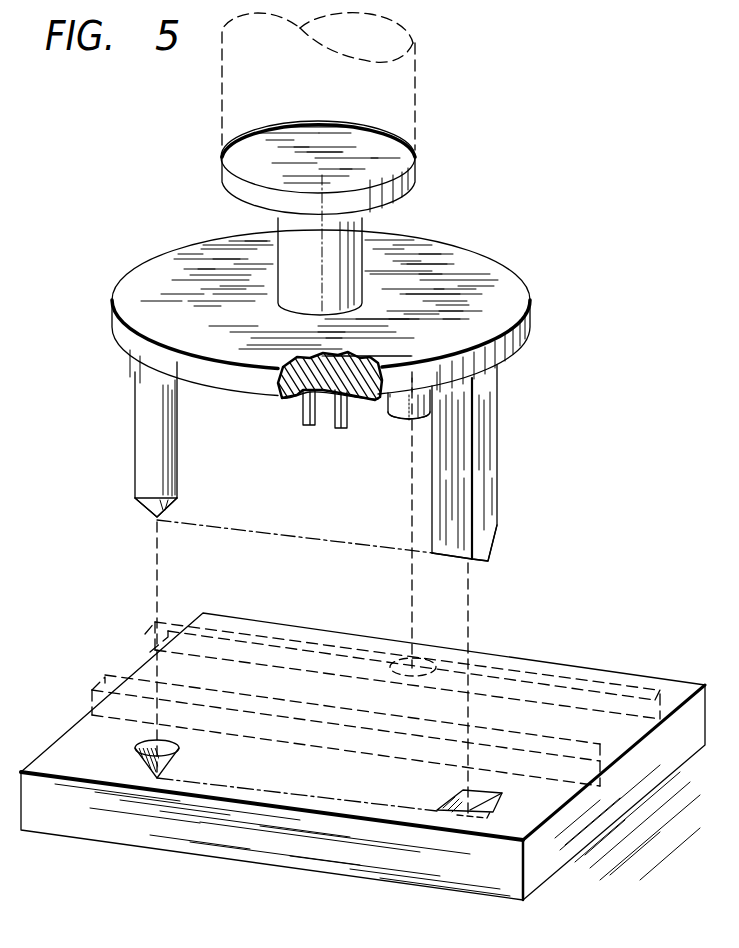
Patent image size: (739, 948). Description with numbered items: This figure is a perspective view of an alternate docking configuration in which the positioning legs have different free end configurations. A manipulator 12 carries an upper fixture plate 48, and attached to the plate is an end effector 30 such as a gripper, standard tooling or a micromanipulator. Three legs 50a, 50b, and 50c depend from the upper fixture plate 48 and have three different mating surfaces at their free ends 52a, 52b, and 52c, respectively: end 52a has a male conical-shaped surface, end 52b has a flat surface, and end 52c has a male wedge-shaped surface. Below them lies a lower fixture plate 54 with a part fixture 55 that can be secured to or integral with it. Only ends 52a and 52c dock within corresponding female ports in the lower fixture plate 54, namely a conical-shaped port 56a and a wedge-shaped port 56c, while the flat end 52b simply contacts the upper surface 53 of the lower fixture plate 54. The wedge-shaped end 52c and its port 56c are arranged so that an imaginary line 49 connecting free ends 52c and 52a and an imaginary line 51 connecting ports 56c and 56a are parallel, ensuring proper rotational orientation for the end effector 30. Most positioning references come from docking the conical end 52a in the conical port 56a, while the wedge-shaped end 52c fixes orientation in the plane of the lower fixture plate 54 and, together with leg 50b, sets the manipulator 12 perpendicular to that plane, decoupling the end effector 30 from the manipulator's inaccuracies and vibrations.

The manipulator 12 is at (410, 101).
The upper fixture plate 48 is at (336, 328).
The end effector 30 is at (297, 415).
The leg 50a is at (145, 412).
The free end 52a is at (158, 516).
The leg 50b is at (393, 410).
The free end 52b is at (405, 422).
The leg 50c is at (488, 475).
The free end 52c is at (488, 560).
The imaginary line 49 is at (282, 540).
The lower fixture plate 54 is at (548, 867).
The part fixture 55 is at (638, 688).
The upper surface 53 is at (402, 667).
The conical-shaped port 56a is at (143, 747).
The imaginary line 51 is at (290, 792).
The wedge-shaped port 56c is at (455, 793).